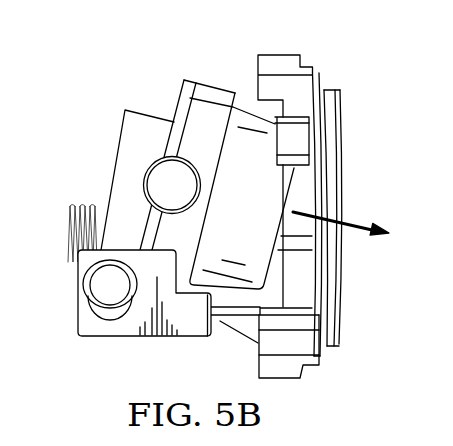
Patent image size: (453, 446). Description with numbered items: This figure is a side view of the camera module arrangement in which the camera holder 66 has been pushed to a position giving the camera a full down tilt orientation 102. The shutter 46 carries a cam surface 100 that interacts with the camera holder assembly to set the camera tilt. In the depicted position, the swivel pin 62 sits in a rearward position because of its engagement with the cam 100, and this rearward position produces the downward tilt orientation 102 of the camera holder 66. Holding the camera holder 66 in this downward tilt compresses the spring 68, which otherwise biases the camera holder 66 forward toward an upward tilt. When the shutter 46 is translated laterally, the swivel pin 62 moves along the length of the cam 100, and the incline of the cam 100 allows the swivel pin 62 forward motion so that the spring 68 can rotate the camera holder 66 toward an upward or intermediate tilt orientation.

The shutter 46 is at (281, 52).
The swivel pin 62 is at (106, 337).
The camera holder 66 is at (147, 115).
The spring 68 is at (56, 223).
The cam surface 100 is at (219, 325).
The full down tilt orientation 102 is at (355, 222).